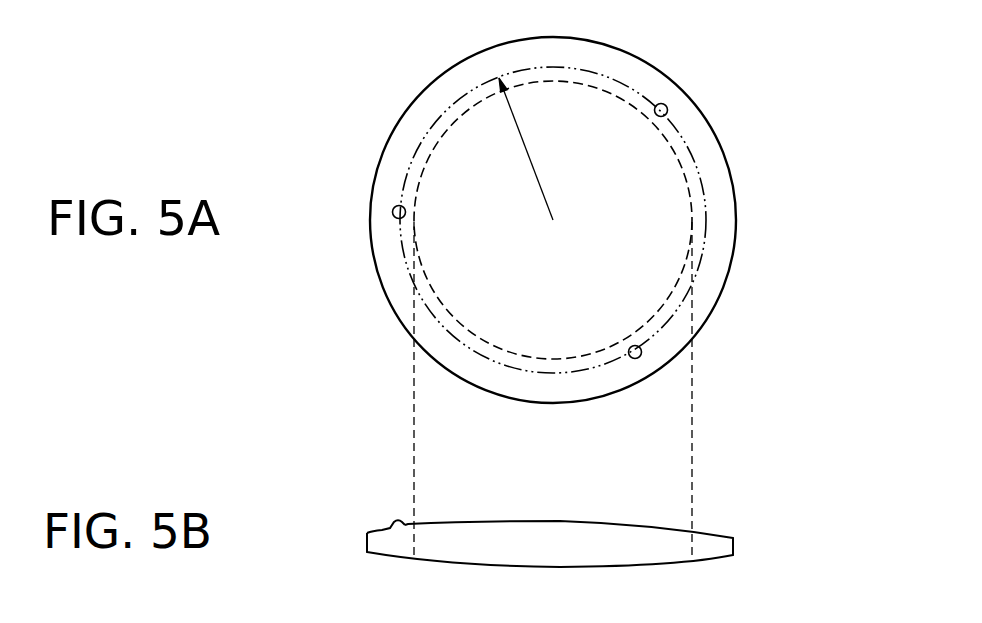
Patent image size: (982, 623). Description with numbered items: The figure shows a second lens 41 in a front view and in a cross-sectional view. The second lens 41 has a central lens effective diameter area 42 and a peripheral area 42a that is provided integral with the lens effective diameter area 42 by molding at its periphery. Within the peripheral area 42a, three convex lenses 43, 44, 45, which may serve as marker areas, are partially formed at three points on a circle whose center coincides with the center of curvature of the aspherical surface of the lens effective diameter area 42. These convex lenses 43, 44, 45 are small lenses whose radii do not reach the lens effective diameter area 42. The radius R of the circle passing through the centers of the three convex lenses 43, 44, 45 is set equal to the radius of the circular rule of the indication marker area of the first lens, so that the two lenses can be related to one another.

In FIG. 5A, the second lens 41 is at (743, 168).
In FIG. 5A, the lens effective diameter area 42 is at (615, 120).
In FIG. 5B, the lens effective diameter area 42 is at (666, 560).
In FIG. 5A, the peripheral area 42a is at (704, 218).
In FIG. 5B, the peripheral area 42a is at (725, 545).
In FIG. 5A, the convex lens 43 is at (392, 212).
In FIG. 5B, the convex lens 43 is at (393, 521).
In FIG. 5A, the convex lens 44 is at (667, 106).
In FIG. 5A, the convex lens 45 is at (640, 357).
In FIG. 5A, the radius R is at (528, 157).